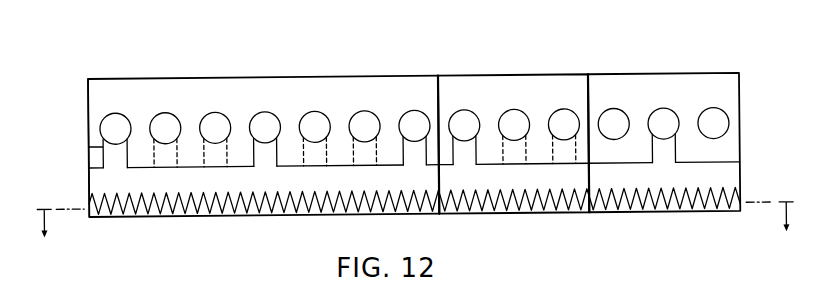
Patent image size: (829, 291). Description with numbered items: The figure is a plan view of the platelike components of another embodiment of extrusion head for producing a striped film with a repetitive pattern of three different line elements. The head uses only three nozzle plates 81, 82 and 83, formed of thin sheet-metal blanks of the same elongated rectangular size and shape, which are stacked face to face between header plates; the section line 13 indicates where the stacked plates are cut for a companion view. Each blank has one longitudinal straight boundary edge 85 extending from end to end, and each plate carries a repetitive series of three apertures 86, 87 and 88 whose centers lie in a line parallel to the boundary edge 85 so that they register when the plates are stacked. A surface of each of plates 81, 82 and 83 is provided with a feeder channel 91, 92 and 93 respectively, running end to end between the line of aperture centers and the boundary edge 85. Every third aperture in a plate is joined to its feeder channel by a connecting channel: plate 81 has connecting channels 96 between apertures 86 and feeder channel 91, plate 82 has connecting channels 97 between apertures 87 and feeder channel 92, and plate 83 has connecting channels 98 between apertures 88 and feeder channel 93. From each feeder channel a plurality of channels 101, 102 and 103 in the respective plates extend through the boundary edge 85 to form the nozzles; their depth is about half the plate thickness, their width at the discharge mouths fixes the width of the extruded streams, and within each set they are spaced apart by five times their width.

The section line 13 is at (417, 235).
The nozzle plate 81 is at (185, 166).
The nozzle plate 82 is at (492, 166).
The nozzle plate 83 is at (691, 165).
The boundary edge 85 is at (127, 218).
The aperture 86 is at (112, 114).
The aperture 87 is at (158, 116).
The aperture 88 is at (208, 116).
The feeder channel 91 is at (344, 179).
The feeder channel 92 is at (462, 180).
The feeder channel 93 is at (739, 175).
The connecting channel 96 is at (88, 148).
The connecting channel 97 is at (176, 140).
The connecting channel 98 is at (226, 140).
The channels 101 is at (283, 196).
The channels 102 is at (573, 192).
The channels 103 is at (678, 196).